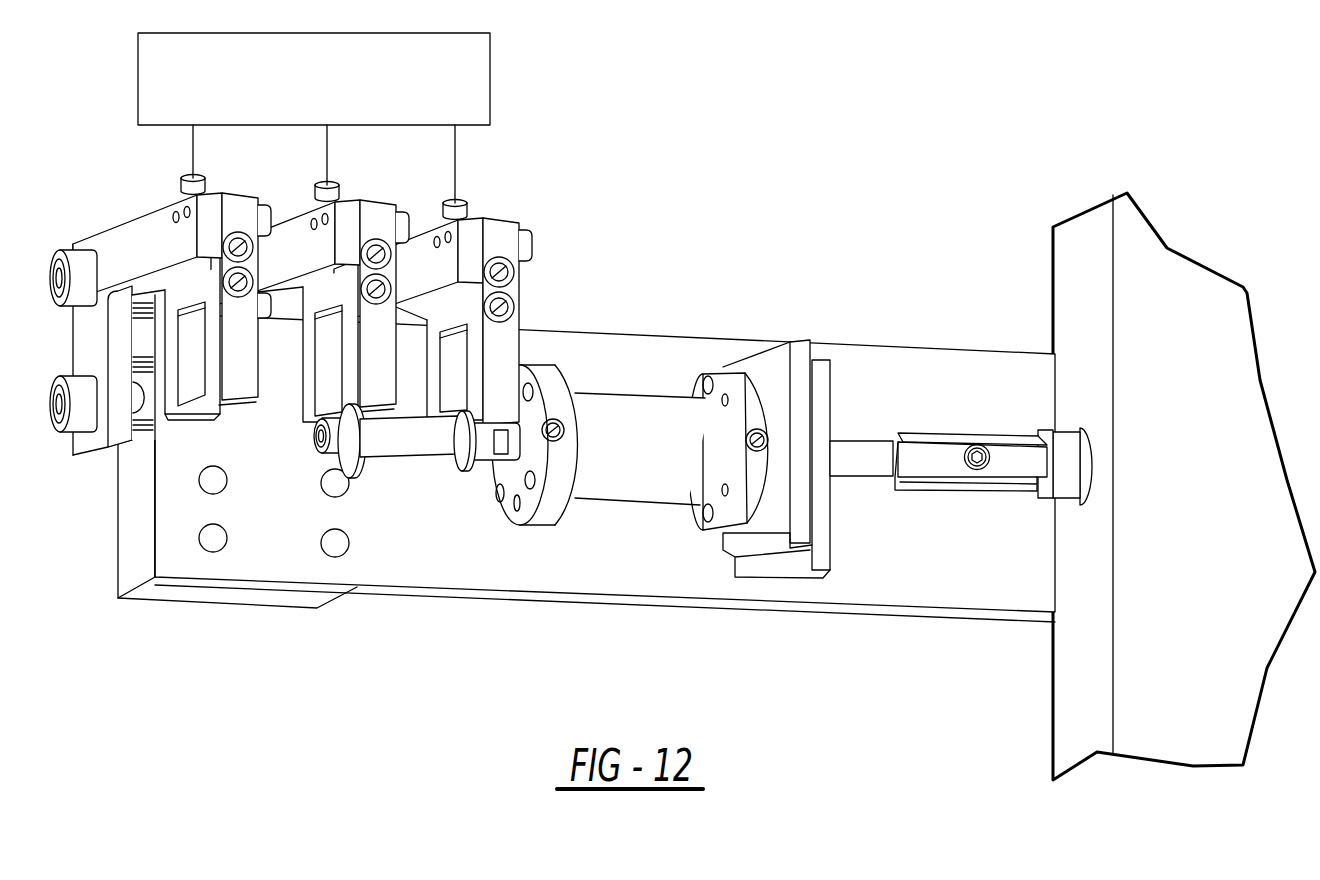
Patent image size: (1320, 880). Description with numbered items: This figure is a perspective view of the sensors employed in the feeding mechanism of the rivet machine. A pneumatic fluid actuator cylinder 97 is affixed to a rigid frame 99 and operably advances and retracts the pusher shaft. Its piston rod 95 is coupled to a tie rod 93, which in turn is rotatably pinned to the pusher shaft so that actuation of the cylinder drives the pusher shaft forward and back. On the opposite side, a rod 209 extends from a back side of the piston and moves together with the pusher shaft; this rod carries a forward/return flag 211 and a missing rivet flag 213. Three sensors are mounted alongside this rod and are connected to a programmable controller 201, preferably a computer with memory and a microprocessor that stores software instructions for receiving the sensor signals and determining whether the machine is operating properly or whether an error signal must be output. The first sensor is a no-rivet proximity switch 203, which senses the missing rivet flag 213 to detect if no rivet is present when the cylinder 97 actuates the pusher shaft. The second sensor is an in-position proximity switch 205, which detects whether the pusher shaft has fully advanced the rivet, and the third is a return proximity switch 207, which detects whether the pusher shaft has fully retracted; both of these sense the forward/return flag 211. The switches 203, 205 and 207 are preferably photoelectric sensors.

The programmable controller 201 is at (316, 89).
The no-rivet proximity switch 203 is at (507, 347).
The in-position proximity switch 205 is at (378, 216).
The return proximity switch 207 is at (240, 377).
The rod 209 is at (417, 442).
The forward/return flag 211 is at (340, 475).
The missing rivet flag 213 is at (466, 462).
The pneumatic fluid actuator cylinder 97 is at (628, 453).
The piston rod 95 is at (853, 457).
The tie rod 93 is at (1073, 483).
The rigid frame 99 is at (936, 345).